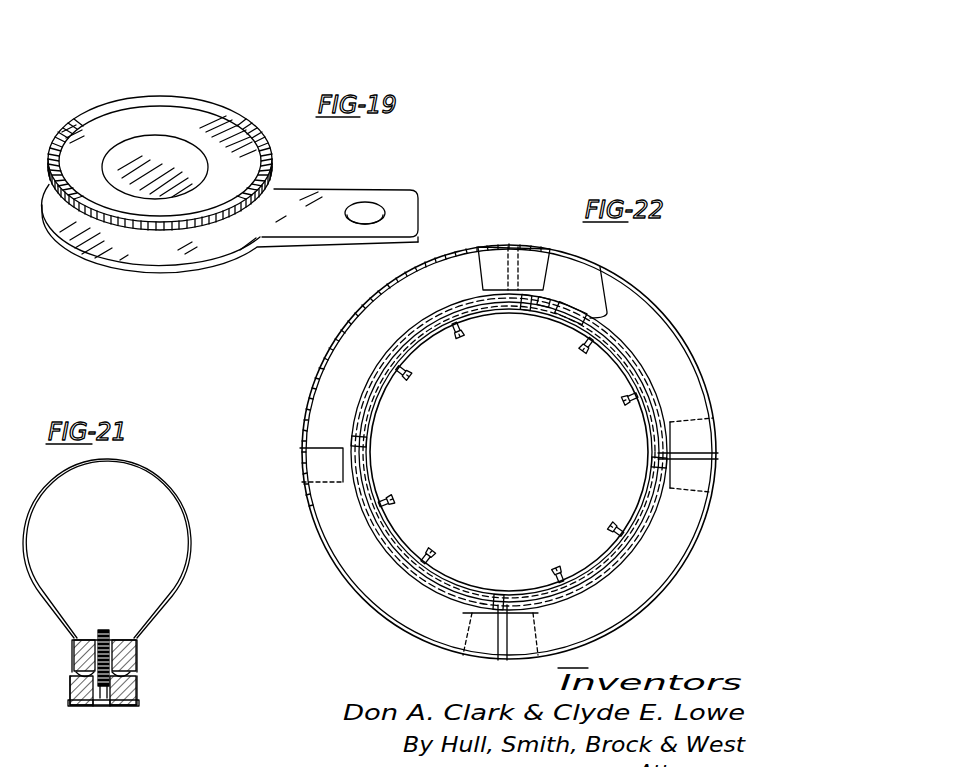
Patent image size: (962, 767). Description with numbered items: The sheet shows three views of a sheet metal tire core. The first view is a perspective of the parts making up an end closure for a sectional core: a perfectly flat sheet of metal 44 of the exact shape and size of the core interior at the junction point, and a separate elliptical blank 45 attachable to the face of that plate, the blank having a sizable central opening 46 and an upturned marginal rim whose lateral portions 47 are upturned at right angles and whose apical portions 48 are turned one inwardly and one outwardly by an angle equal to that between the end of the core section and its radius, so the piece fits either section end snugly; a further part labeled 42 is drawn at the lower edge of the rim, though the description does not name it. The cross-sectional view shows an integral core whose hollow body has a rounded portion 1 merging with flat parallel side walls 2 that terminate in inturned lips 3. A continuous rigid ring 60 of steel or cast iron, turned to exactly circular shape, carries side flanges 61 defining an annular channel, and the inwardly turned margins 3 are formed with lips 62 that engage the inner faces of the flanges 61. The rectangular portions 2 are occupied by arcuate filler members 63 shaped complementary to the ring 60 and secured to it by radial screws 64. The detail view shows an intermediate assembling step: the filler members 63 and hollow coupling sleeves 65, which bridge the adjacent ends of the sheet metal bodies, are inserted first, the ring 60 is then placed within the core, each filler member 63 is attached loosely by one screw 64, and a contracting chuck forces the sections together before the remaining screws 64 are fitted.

In FIG. 19, the lateral portions of the upturned marginal rim 47 is at (147, 95).
In FIG. 19, the apical portions of the upturned marginal rim 48 is at (50, 148).
In FIG. 19, the elliptical blank 45 is at (160, 161).
In FIG. 19, the central opening 46 is at (166, 142).
In FIG. 19, the ring lower rim 42 is at (148, 220).
In FIG. 19, the flat sheet of metal 44 is at (170, 262).
In FIG. 22, the hollow coupling sleeve 65 is at (527, 262).
In FIG. 22, the arcuate filler member 63 is at (405, 333).
In FIG. 21, the arcuate filler member 63 is at (82, 642).
In FIG. 22, the radial screw 64 is at (525, 318).
In FIG. 21, the radial screw 64 is at (107, 628).
In FIG. 22, the continuous rigid ring 60 is at (405, 541).
In FIG. 21, the continuous rigid ring 60 is at (126, 707).
In FIG. 21, the rounded portion 1 is at (76, 470).
In FIG. 21, the flat parallel side walls 2 is at (117, 626).
In FIG. 21, the side flange 61 is at (72, 674).
In FIG. 21, the inturned lip 3 is at (126, 693).
In FIG. 21, the lip 62 is at (137, 698).